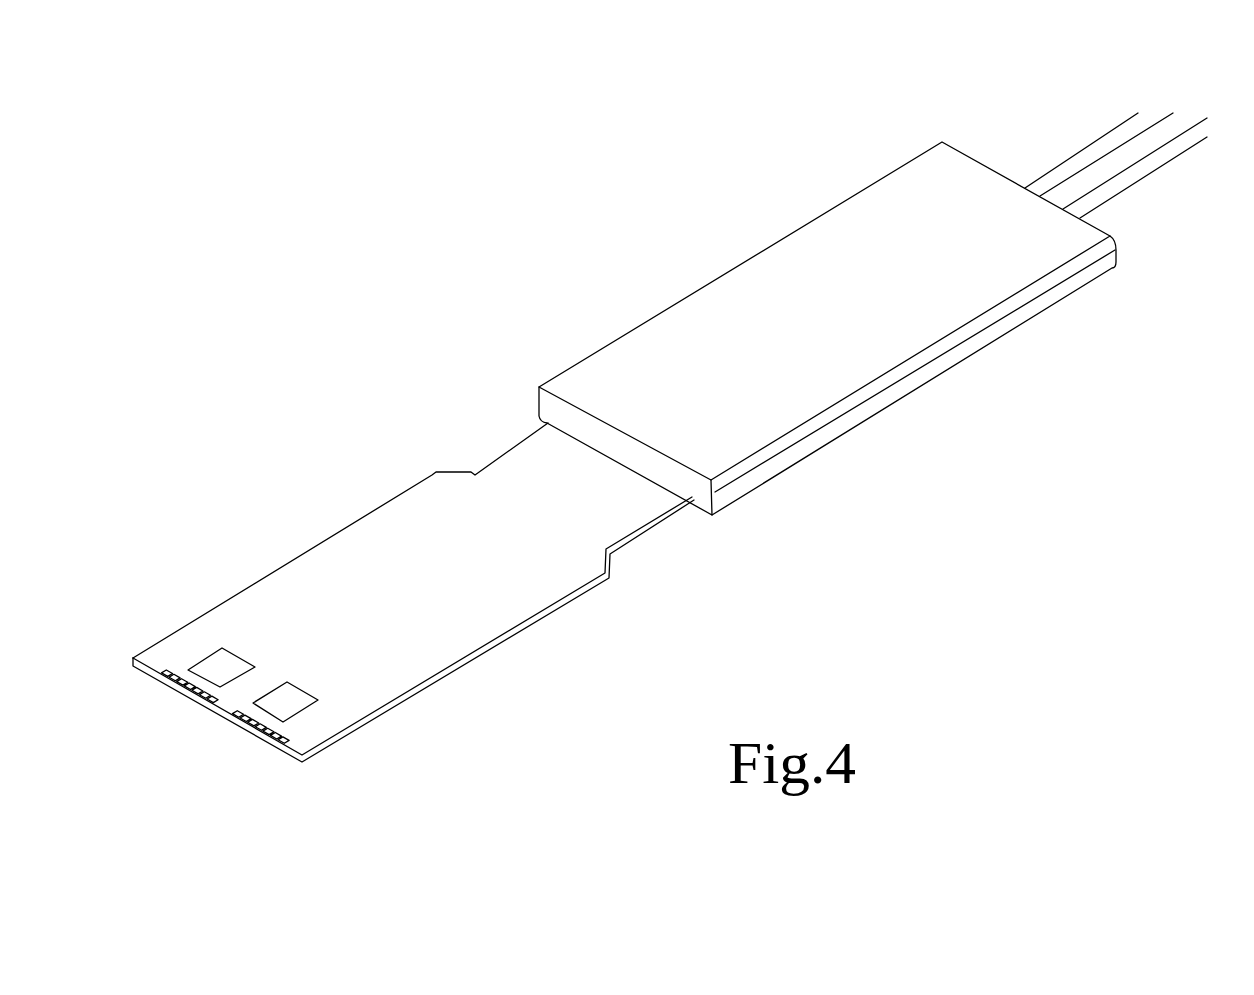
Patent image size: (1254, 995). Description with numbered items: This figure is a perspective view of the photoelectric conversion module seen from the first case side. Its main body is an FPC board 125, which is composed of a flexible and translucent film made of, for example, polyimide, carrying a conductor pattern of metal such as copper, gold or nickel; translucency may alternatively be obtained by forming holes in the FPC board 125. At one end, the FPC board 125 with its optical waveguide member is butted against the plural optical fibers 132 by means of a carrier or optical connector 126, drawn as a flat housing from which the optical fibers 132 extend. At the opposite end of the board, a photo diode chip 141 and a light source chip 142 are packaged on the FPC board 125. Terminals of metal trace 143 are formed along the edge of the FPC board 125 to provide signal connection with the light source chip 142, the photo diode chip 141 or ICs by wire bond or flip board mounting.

The FPC board 125 is at (388, 548).
The optical connector 126 is at (768, 272).
The optical fibers 132 is at (1148, 165).
The photo diode chip 141 is at (231, 664).
The light source chip 142 is at (286, 708).
The terminals of metal trace 143 is at (247, 728).